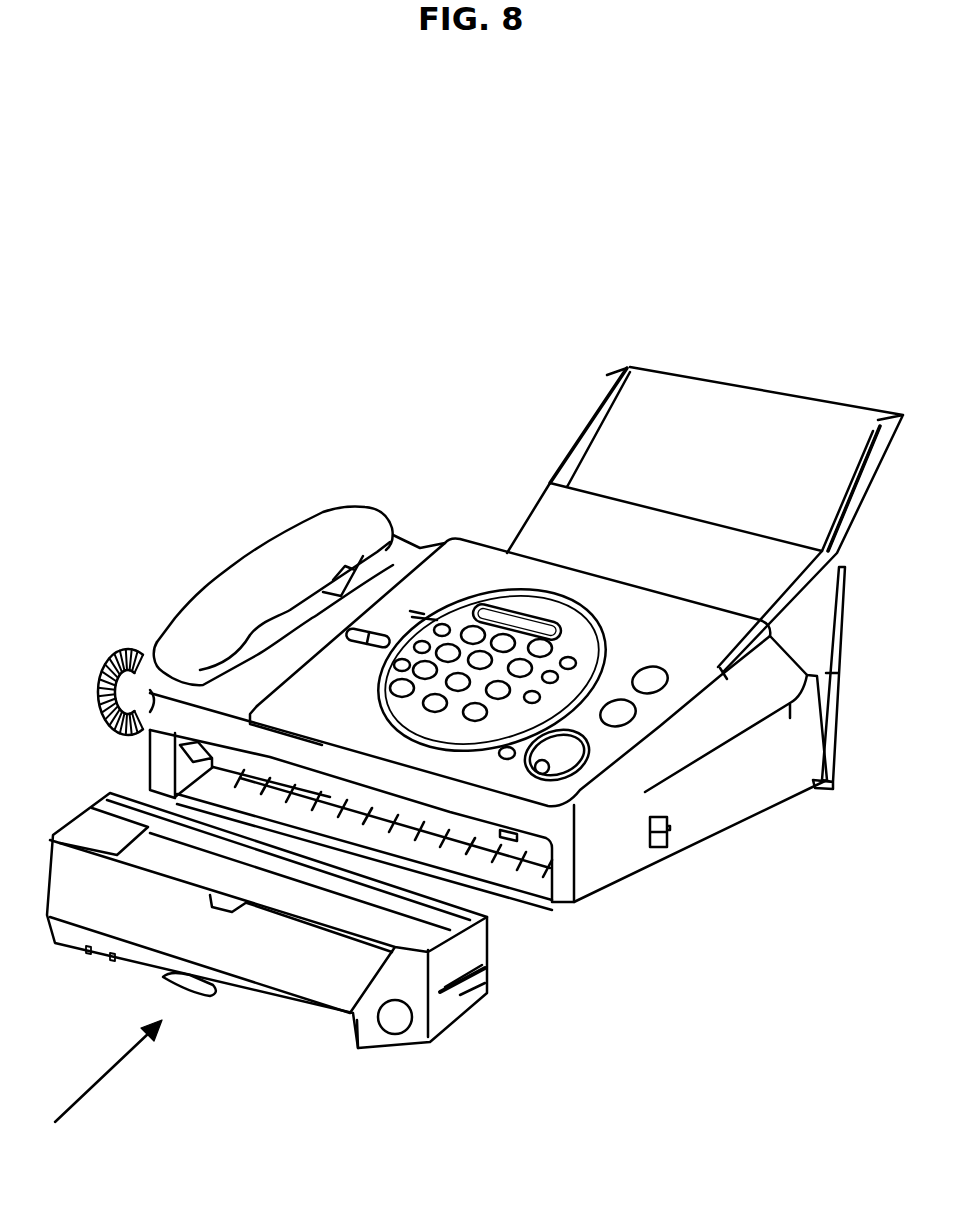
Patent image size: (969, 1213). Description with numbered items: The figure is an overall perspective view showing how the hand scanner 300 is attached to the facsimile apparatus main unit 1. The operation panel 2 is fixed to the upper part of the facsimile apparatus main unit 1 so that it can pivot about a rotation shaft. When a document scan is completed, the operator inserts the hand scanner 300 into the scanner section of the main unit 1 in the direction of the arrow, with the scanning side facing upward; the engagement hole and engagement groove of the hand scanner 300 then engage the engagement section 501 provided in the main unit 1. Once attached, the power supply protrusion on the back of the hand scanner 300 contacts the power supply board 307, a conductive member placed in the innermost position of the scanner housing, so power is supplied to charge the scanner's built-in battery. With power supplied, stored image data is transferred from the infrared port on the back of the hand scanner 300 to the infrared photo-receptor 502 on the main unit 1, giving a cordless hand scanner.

The facsimile apparatus main unit 1 is at (760, 868).
The operation panel 2 is at (470, 570).
The hand scanner 300 is at (315, 1033).
The power supply board 307 is at (215, 766).
The engagement section 501 is at (187, 750).
The infrared photo-receptor 502 is at (450, 833).